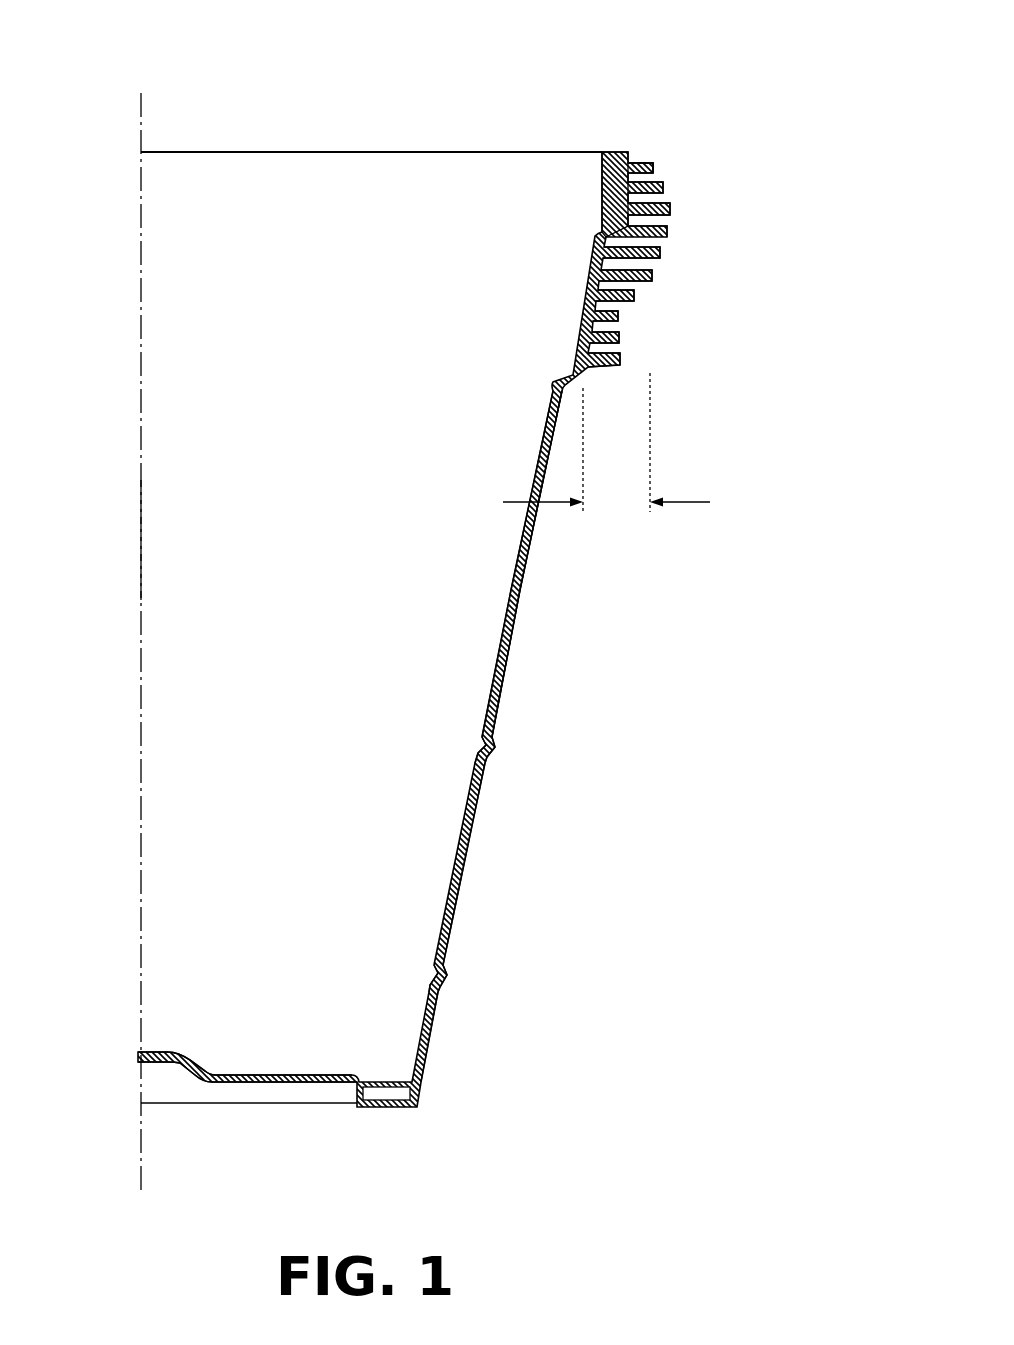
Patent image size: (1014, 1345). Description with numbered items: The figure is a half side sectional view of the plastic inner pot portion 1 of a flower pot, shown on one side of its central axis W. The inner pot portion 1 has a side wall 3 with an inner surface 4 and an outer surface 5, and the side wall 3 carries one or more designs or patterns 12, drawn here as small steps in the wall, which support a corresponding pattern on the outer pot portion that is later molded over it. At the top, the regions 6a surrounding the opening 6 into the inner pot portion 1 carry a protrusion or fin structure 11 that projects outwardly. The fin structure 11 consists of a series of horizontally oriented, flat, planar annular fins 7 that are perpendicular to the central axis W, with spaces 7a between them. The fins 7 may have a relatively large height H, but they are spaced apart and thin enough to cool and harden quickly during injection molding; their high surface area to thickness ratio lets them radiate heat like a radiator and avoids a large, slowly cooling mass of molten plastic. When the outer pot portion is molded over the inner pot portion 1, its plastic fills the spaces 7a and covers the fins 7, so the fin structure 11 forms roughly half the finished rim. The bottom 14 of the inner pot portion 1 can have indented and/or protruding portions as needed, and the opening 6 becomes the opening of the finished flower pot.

The inner pot portion 1 is at (560, 100).
The side wall 3 is at (510, 681).
The inner surface 4 is at (500, 640).
The outer surface 5 is at (514, 618).
The opening 6 is at (232, 167).
The regions surrounding the opening 6a is at (613, 152).
The fins 7 is at (674, 188).
The spaces between the fins 7a is at (663, 220).
The fin structure 11 is at (760, 210).
The designs or patterns 12 is at (496, 753).
The bottom 14 is at (255, 1073).
The central axis W is at (141, 537).
The height H is at (606, 447).